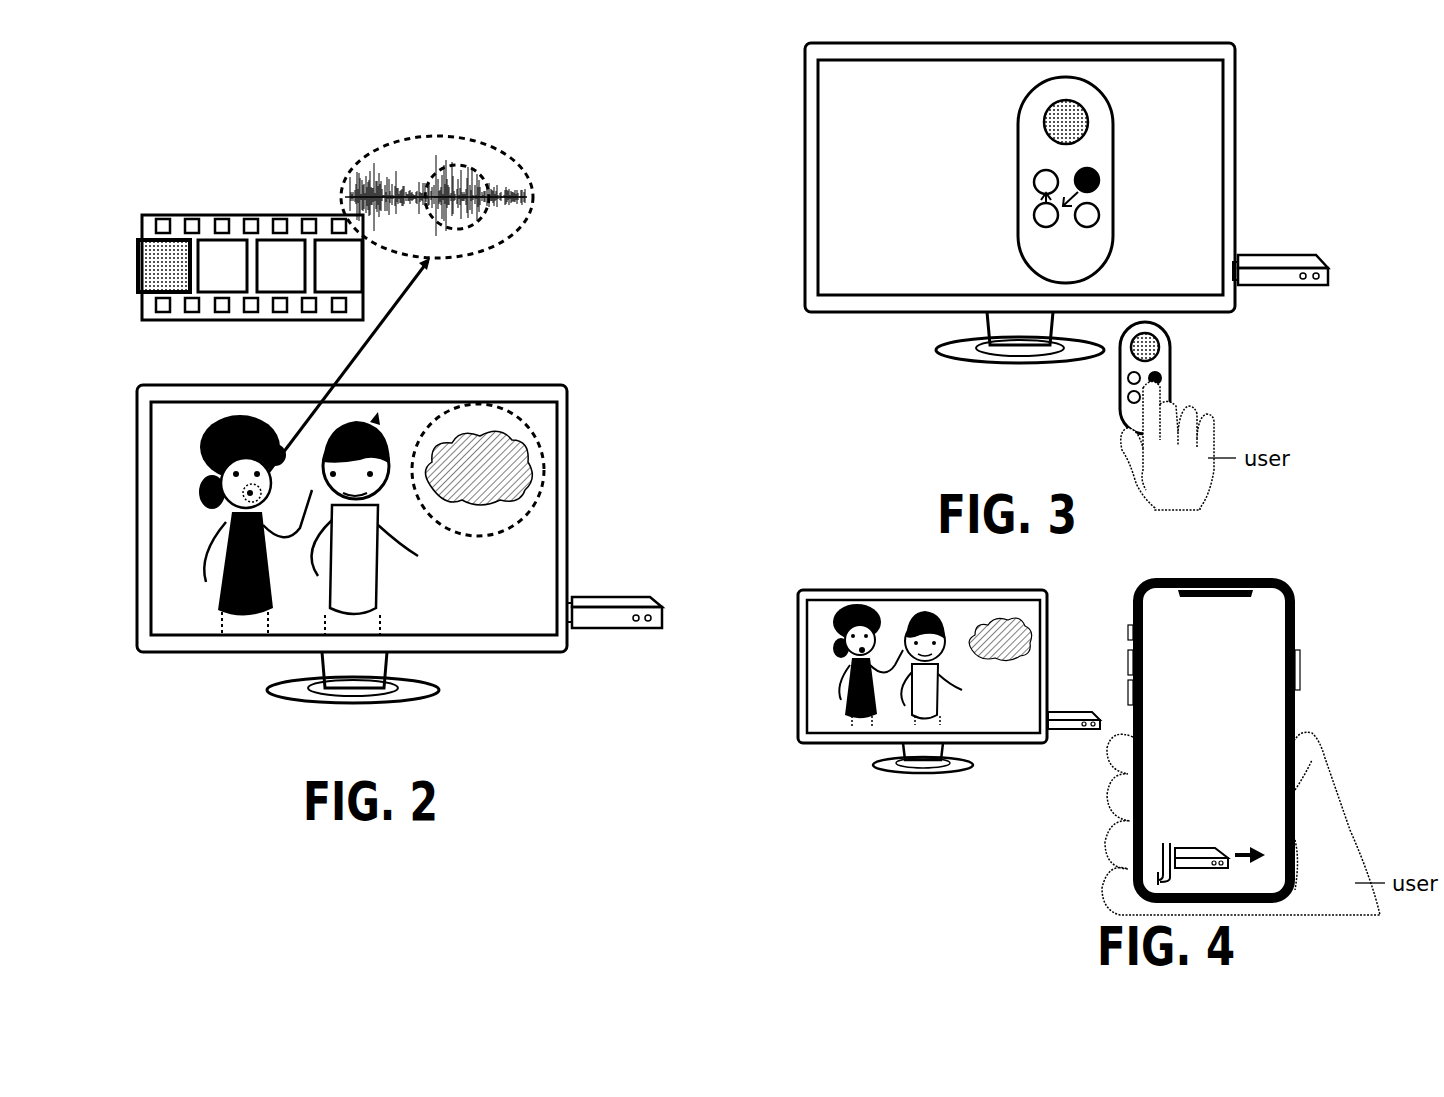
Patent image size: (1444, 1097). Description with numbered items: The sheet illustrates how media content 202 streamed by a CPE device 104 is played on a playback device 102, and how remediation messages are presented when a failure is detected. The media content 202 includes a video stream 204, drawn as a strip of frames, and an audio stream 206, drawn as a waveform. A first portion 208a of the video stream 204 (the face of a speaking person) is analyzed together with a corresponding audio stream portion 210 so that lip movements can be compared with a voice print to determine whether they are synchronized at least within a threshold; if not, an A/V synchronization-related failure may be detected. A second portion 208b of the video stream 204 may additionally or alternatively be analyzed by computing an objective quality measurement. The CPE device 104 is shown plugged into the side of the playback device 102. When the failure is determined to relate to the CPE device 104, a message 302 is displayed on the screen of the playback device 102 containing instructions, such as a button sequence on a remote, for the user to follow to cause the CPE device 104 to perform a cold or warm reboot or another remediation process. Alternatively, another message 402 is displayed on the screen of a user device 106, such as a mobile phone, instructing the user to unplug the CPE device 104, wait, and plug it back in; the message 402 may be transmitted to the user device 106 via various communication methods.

In FIG. 2, the playback device 102 is at (567, 423).
In FIG. 3, the playback device 102 is at (1235, 82).
In FIG. 4, the playback device 102 is at (1047, 610).
In FIG. 2, the CPE device 104 is at (662, 615).
In FIG. 3, the CPE device 104 is at (1328, 273).
In FIG. 4, the CPE device 104 is at (1062, 730).
In FIG. 3, the user device 106 is at (1170, 353).
In FIG. 4, the user device 106 is at (1295, 632).
In FIG. 2, the media content 202 is at (167, 215).
In FIG. 2, the video stream 204 is at (325, 292).
In FIG. 2, the audio stream 206 is at (377, 150).
In FIG. 2, the first portion of the video stream 208a is at (233, 507).
In FIG. 2, the second portion of the video stream 208b is at (517, 418).
In FIG. 2, the audio stream portion 210 is at (483, 172).
In FIG. 3, the message 302 is at (1157, 127).
In FIG. 4, the message 402 is at (1263, 708).